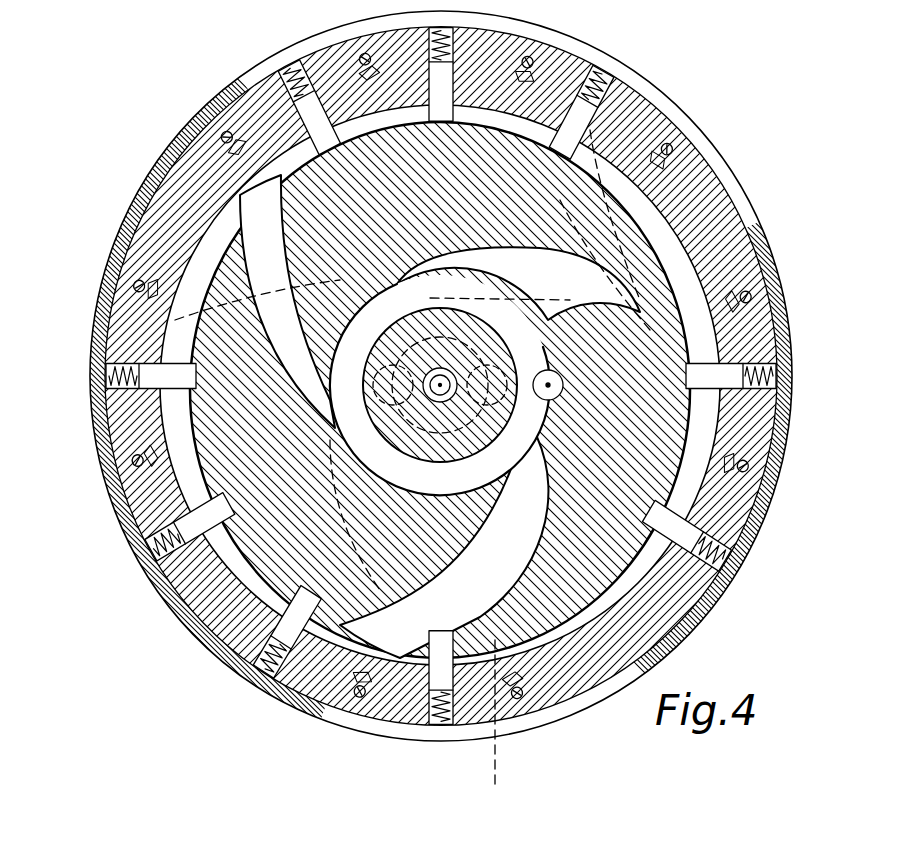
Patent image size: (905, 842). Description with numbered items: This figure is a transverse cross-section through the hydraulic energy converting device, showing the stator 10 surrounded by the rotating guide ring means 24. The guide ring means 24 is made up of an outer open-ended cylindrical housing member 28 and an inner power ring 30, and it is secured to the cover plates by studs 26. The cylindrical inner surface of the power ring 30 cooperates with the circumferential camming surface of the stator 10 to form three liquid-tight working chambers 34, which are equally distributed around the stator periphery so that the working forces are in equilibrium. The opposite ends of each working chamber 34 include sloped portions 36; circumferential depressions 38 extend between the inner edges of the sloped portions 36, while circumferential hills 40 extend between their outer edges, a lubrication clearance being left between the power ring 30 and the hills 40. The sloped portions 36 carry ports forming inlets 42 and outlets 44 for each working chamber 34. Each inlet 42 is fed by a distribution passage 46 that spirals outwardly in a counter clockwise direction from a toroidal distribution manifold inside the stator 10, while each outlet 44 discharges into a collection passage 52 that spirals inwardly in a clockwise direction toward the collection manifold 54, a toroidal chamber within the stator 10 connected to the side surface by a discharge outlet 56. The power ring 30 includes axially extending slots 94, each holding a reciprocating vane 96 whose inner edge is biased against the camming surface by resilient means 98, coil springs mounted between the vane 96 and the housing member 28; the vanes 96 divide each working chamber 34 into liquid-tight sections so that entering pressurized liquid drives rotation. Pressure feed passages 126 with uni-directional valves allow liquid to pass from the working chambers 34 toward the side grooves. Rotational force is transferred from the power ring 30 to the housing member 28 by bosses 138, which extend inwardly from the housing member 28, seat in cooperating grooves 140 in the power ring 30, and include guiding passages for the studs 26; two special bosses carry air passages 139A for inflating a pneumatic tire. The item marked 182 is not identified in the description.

The stator 10 is at (590, 190).
The guide ring means 24 is at (735, 282).
The studs 26 is at (686, 150).
The housing member 28 is at (680, 572).
The power ring 30 is at (770, 345).
The working chambers 34 is at (200, 100).
The sloped portions 36 is at (253, 233).
The circumferential depressions 38 is at (760, 425).
The circumferential hills 40 is at (193, 267).
The inlets 42 is at (490, 254).
The outlets 44 is at (225, 690).
The distribution passages 46 is at (412, 467).
The collection passages 52 is at (690, 275).
The collection manifold 54 is at (480, 500).
The discharge outlet 56 is at (548, 380).
The slots 94 is at (650, 200).
The vanes 96 is at (150, 397).
The resilient means 98 is at (452, 48).
The pressure feed passages 126 is at (235, 213).
The bosses 138 is at (343, 62).
The air passages 139A is at (130, 257).
The cooperating grooves 140 is at (193, 158).
The base line 182 is at (205, 838).